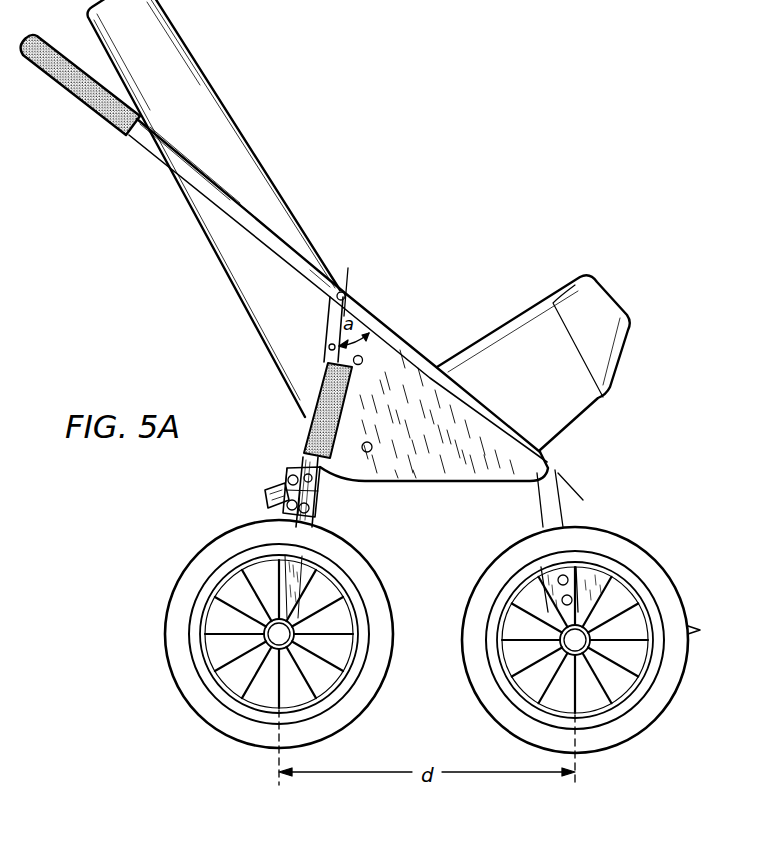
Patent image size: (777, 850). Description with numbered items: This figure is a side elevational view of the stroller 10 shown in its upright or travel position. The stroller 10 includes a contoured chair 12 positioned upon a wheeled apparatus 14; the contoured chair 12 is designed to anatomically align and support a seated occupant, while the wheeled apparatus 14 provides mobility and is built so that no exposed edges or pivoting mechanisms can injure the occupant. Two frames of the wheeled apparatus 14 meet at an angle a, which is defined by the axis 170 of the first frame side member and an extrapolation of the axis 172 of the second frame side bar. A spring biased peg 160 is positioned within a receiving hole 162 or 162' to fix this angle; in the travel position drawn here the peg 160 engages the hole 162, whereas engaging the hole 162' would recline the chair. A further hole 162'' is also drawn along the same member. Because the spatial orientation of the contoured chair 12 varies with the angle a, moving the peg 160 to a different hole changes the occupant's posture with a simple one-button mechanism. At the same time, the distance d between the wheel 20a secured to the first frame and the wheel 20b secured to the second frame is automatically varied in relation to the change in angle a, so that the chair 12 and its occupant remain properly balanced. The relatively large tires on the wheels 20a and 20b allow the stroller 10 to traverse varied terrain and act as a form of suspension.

The stroller 10 is at (304, 169).
The contoured chair 12 is at (230, 135).
The wheeled apparatus 14 is at (178, 172).
The axis of first frame side member 170 is at (310, 258).
The axis of second frame side bar 172 is at (351, 281).
The peg 160 is at (323, 368).
The receiving hole 162 is at (267, 358).
The receiving hole 162' is at (418, 339).
The pin hole 162'' is at (377, 481).
The wheel 20a is at (490, 554).
The wheel 20b is at (196, 548).